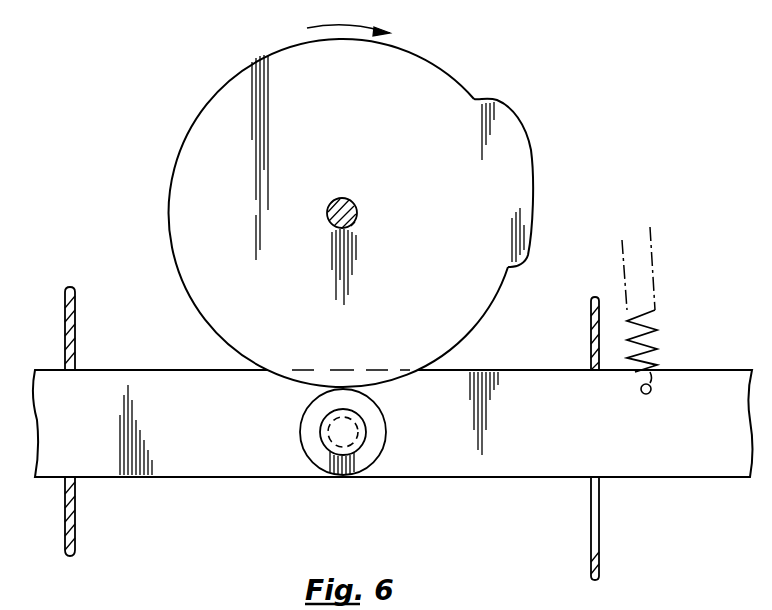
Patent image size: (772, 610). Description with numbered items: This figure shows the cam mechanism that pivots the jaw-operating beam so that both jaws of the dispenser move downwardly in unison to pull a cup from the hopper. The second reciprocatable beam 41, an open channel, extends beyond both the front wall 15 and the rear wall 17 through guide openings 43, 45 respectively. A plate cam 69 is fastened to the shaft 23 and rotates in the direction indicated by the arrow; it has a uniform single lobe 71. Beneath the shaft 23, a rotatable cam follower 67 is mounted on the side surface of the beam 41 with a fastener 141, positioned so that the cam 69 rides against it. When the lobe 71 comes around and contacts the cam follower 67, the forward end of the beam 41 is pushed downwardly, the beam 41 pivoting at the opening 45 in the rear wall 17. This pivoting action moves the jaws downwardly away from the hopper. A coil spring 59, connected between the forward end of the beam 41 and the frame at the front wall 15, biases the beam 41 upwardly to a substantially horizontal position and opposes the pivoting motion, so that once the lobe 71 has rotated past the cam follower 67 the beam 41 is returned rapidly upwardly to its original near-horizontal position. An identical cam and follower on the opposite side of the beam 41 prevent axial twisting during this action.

The plate cam 69 is at (291, 293).
The lobe 71 is at (522, 148).
The shaft 23 is at (356, 204).
The second reciprocatable beam 41 is at (192, 478).
The rotatable cam follower 67 is at (310, 462).
The fastener 141 is at (347, 447).
The rear wall 17 is at (75, 307).
The guide opening 45 is at (75, 368).
The front wall 15 is at (590, 318).
The guide opening 43 is at (600, 527).
The coil spring 59 is at (658, 319).